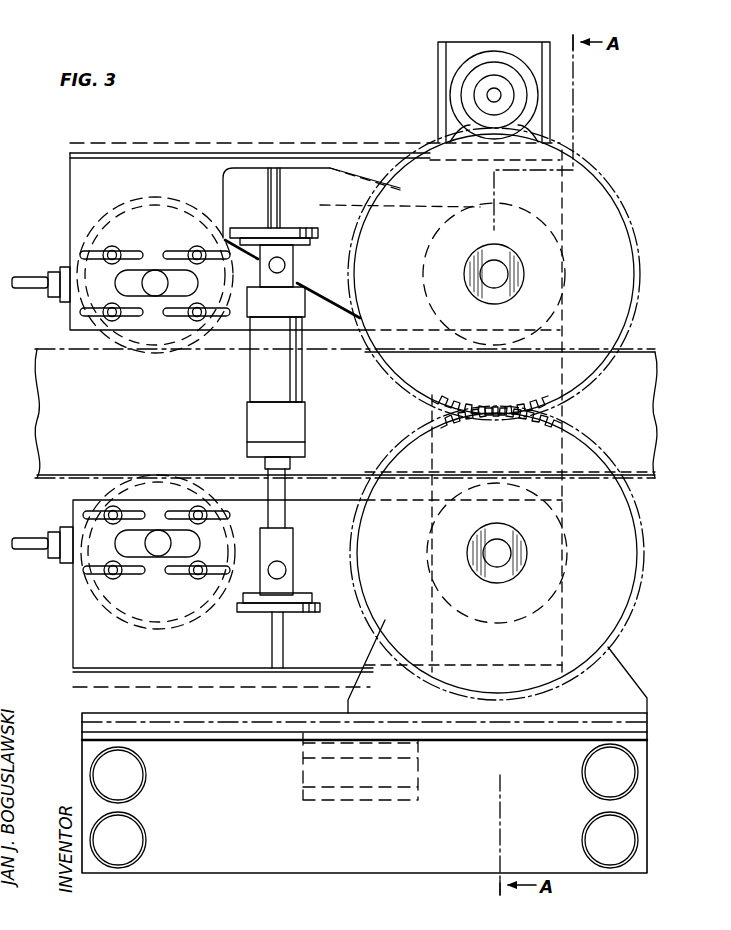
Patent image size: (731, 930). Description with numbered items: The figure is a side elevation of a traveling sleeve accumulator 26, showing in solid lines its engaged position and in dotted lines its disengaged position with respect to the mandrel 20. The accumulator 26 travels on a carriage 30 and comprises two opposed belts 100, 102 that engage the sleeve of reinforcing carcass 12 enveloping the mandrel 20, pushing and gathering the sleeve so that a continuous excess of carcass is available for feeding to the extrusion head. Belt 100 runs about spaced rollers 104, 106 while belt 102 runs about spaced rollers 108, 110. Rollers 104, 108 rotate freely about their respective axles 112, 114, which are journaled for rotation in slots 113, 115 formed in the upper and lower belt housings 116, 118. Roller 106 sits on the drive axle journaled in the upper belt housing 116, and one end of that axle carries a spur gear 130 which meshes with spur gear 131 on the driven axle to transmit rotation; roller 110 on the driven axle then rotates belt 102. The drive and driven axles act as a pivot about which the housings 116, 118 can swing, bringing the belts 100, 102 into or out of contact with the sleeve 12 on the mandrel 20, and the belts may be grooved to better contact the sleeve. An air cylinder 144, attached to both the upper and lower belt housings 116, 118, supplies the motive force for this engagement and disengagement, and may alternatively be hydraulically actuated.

The reinforcing carcass 12 is at (60, 348).
The mandrel 20 is at (346, 413).
The traveling sleeve accumulator 26 is at (64, 158).
The carriage 30 is at (651, 778).
The belt 100 is at (208, 210).
The belt 102 is at (229, 620).
The roller 104 is at (128, 215).
The roller 106 is at (568, 267).
The roller 108 is at (96, 481).
The roller 110 is at (526, 615).
The axle 112 is at (156, 270).
The slot 113 is at (115, 285).
The axle 114 is at (157, 556).
The slot 115 is at (208, 515).
The upper belt housing 116 is at (226, 152).
The lower belt housing 118 is at (100, 672).
The spur gear 130 is at (590, 177).
The spur gear 131 is at (636, 582).
The air cylinder 144 is at (248, 372).